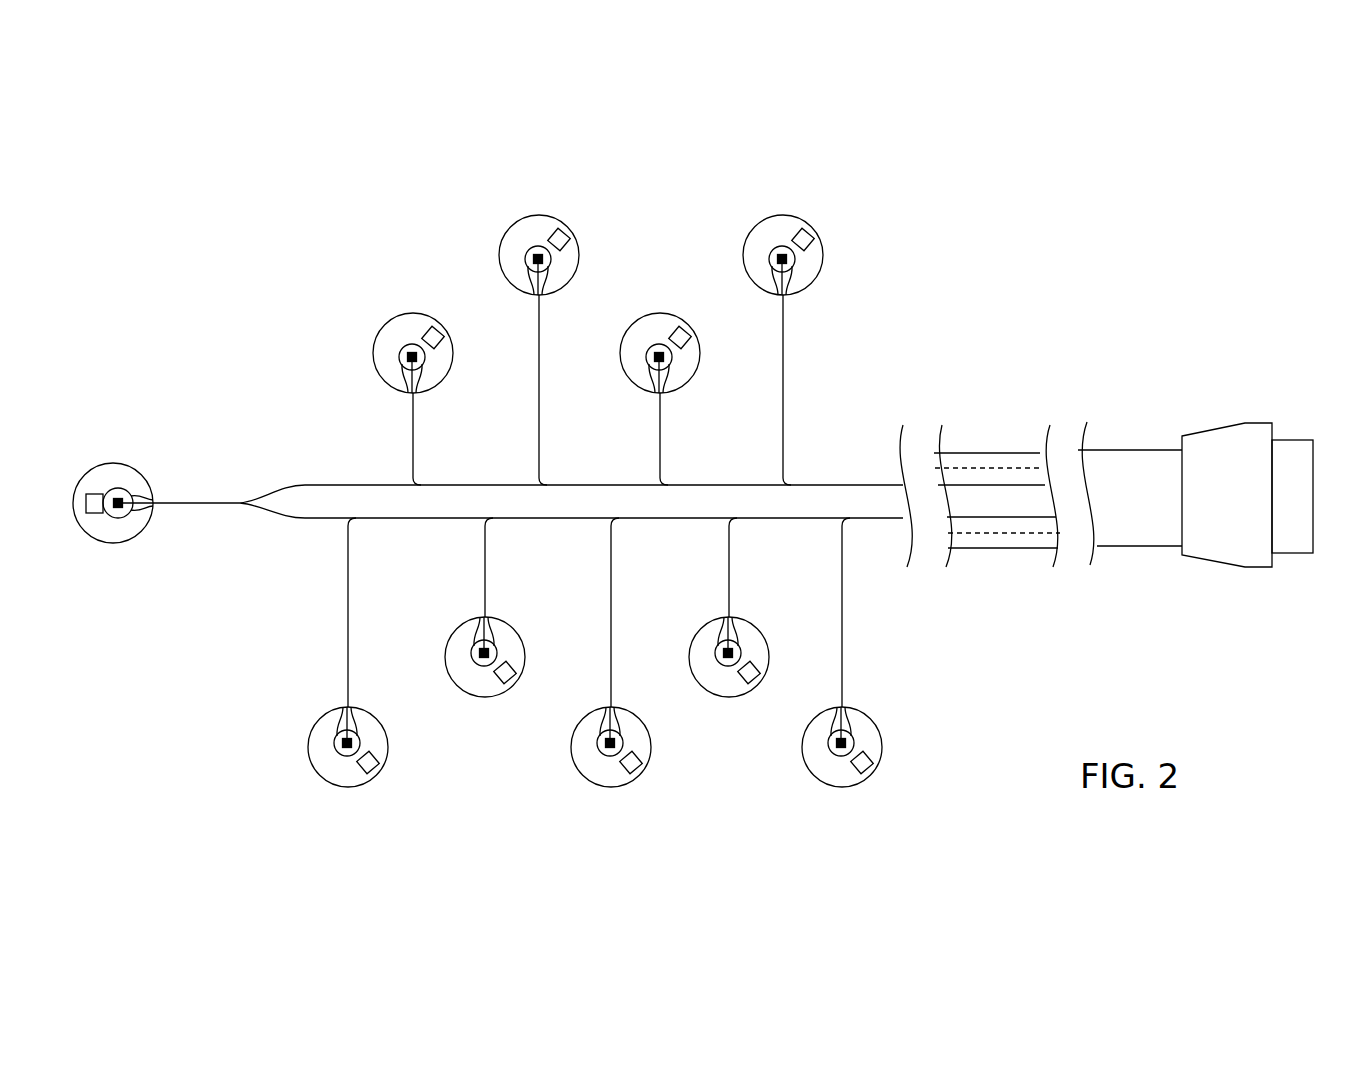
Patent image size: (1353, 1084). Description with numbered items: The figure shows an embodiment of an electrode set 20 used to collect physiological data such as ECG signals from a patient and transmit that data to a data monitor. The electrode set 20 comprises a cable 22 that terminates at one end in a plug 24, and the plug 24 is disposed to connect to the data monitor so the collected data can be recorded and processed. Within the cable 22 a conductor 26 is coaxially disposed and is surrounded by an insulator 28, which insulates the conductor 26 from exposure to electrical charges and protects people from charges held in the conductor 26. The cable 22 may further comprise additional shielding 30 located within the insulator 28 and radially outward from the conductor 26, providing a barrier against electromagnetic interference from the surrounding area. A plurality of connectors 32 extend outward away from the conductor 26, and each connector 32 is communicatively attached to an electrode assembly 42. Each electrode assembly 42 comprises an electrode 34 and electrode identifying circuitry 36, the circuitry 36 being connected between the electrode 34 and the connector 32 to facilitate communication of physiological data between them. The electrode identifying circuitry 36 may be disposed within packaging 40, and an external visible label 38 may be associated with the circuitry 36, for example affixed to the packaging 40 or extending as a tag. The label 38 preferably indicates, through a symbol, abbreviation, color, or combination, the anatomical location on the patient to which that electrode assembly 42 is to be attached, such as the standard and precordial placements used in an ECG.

The electrode set 20 is at (1026, 246).
The cable 22 is at (1143, 460).
The plug 24 is at (1225, 436).
The conductor 26 is at (843, 492).
The insulator 28 is at (957, 470).
The shielding 30 is at (997, 500).
The connector 32 is at (188, 503).
The electrode 34 is at (783, 222).
The electrode identifying circuitry 36 is at (768, 258).
The external visible label 38 is at (814, 235).
The packaging 40 is at (795, 268).
The electrode assembly 42 is at (510, 512).